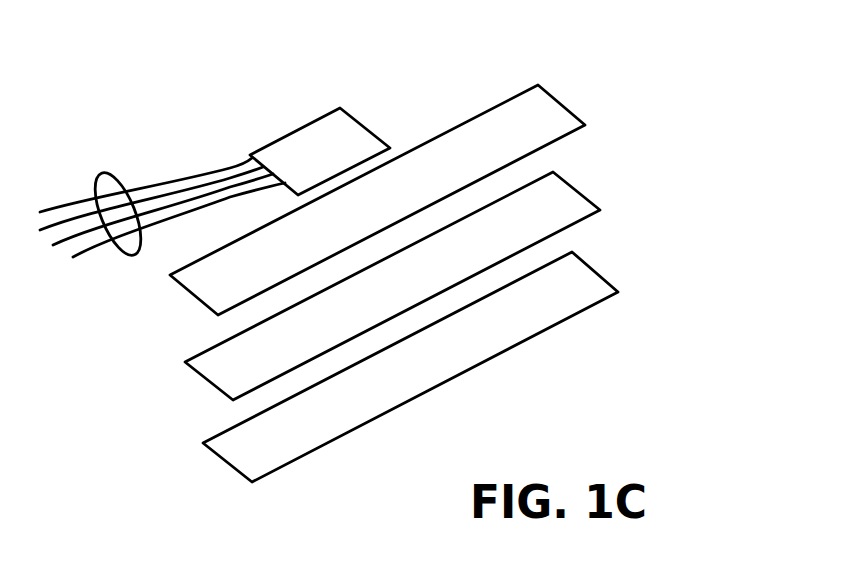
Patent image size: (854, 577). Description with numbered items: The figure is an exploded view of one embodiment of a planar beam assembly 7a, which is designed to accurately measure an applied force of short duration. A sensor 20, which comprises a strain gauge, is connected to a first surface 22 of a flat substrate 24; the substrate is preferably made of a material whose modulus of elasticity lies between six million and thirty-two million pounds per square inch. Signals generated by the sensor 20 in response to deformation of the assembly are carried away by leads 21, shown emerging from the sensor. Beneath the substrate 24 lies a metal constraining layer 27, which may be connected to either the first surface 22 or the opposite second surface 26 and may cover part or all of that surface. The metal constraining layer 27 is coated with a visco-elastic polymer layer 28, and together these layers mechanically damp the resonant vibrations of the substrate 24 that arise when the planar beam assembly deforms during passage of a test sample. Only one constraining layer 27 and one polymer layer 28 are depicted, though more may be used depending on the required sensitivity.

The planar beam assembly 7a is at (213, 98).
The sensor 20 is at (347, 132).
The leads 21 is at (101, 173).
The first surface 22 is at (470, 143).
The substrate 24 is at (523, 90).
The second surface 26 is at (562, 141).
The metal constraining layer 27 is at (590, 193).
The visco-elastic polymer layer 28 is at (610, 278).